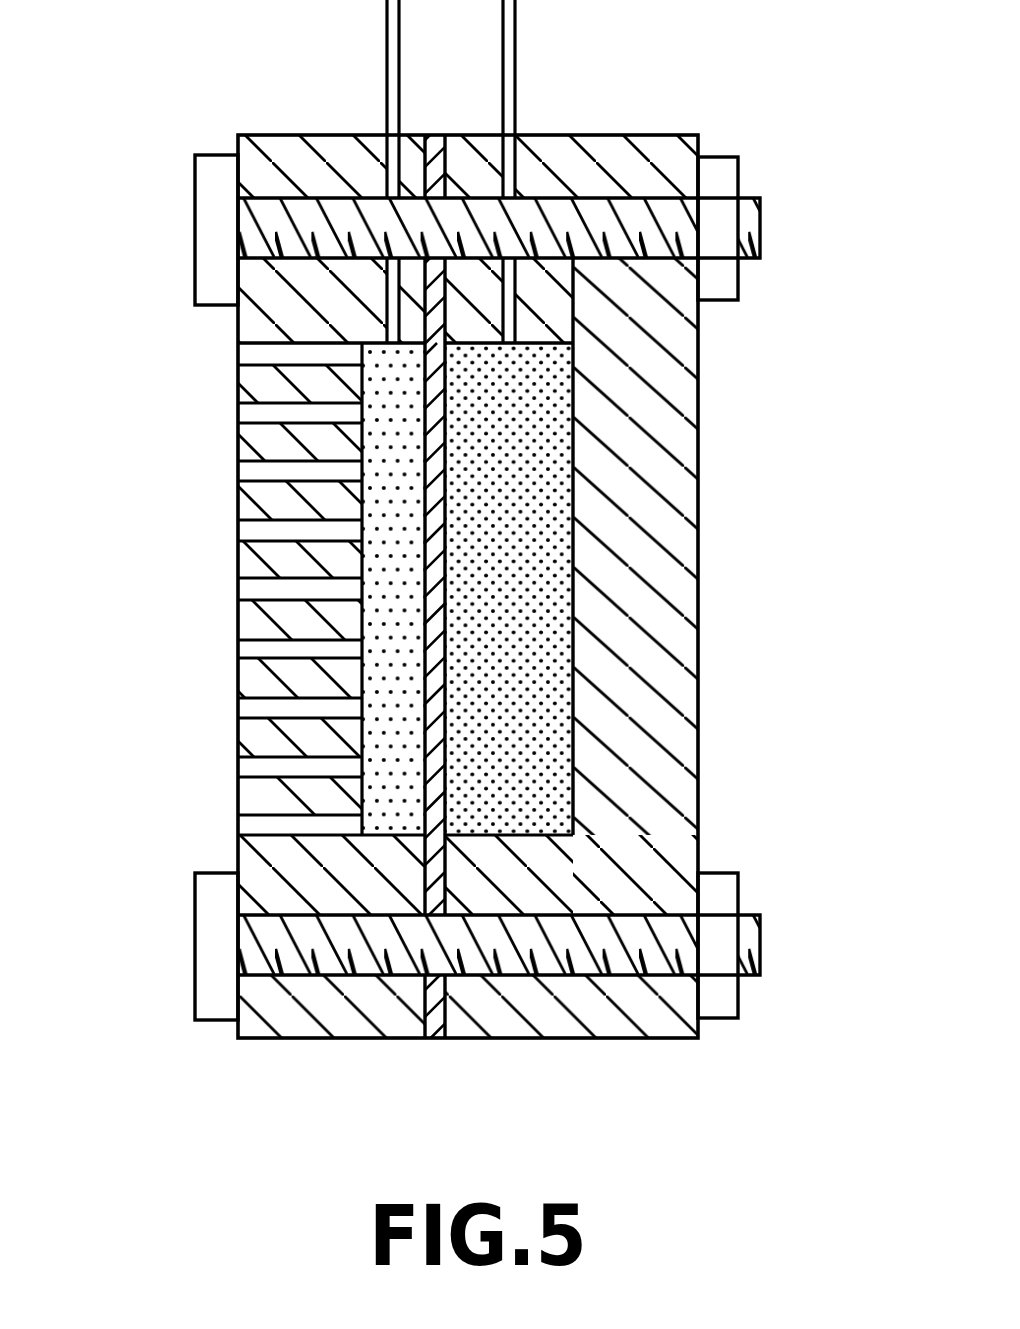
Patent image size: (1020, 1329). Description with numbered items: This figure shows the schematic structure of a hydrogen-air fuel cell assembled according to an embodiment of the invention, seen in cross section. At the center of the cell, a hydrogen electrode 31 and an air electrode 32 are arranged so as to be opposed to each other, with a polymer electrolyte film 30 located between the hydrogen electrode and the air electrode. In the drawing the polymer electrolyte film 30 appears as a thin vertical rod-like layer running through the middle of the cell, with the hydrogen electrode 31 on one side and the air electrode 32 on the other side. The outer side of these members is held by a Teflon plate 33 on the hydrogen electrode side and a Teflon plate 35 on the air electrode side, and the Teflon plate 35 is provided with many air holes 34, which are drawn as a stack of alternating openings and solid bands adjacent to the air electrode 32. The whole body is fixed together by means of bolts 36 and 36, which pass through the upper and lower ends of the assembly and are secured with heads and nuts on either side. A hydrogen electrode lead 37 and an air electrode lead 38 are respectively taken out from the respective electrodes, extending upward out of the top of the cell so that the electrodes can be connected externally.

The polymer electrolyte film 30 is at (437, 627).
The hydrogen electrode 31 is at (527, 765).
The air electrode 32 is at (386, 668).
The Teflon plate 33 is at (668, 422).
The air holes 34 is at (256, 514).
The Teflon plate 35 is at (262, 325).
The bolts 36 is at (195, 240).
The hydrogen electrode lead 37 is at (515, 62).
The air electrode lead 38 is at (385, 62).